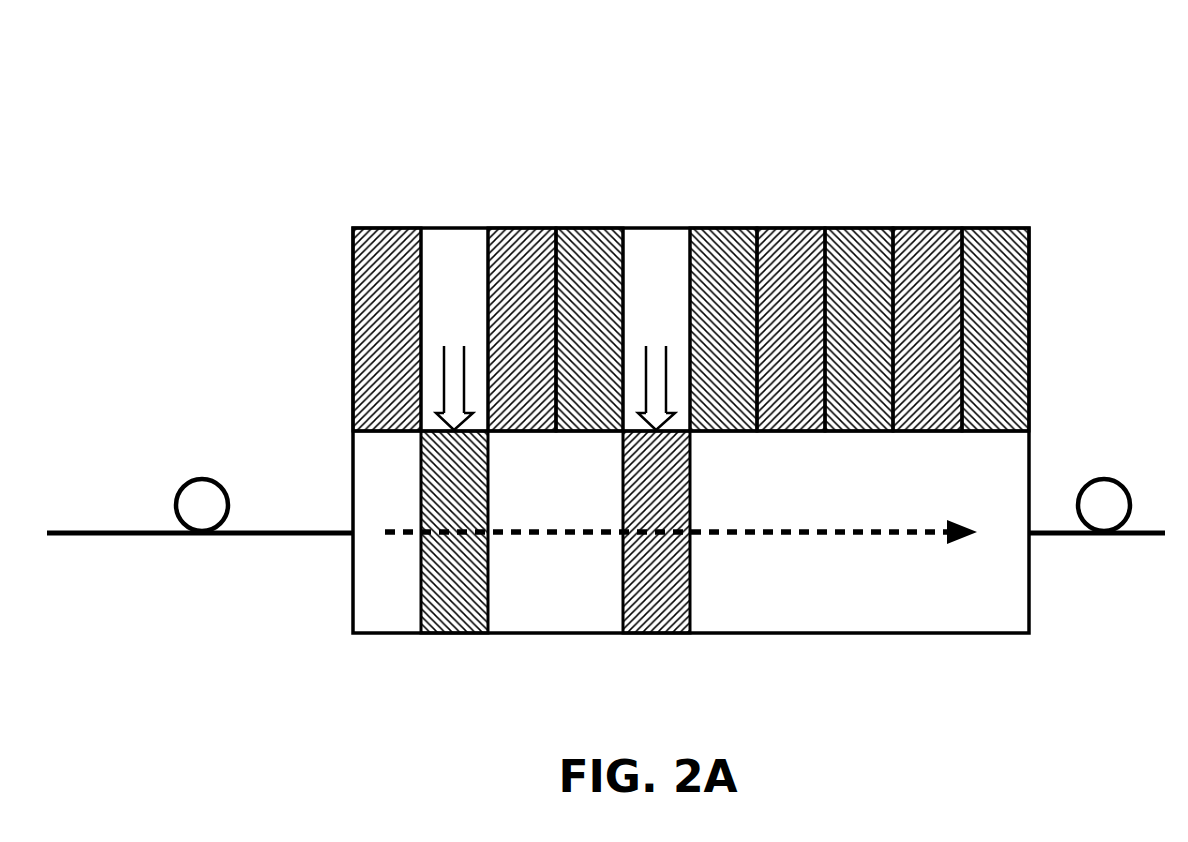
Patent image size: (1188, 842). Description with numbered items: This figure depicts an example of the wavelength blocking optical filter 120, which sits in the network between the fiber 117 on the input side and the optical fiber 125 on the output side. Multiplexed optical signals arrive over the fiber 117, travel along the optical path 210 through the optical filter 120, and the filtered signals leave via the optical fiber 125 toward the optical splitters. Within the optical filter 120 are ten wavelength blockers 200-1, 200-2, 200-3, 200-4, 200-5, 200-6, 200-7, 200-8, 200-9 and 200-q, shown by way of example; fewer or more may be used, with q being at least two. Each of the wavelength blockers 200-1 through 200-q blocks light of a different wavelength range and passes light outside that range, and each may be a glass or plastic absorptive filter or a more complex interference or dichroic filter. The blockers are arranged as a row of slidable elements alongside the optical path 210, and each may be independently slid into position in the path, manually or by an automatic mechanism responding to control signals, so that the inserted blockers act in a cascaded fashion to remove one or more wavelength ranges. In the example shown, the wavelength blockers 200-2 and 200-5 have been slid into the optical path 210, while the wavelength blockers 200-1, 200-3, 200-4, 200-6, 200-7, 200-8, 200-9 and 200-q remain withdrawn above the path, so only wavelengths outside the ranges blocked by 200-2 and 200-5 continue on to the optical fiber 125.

The wavelength blocking optical filter 120 is at (206, 101).
The fiber 117 is at (202, 560).
The optical fiber 125 is at (1104, 560).
The optical path 210 is at (784, 554).
The wavelength blocker 200-1 is at (387, 214).
The wavelength blocker 200-2 is at (455, 647).
The wavelength blocker 200-3 is at (522, 214).
The wavelength blocker 200-4 is at (589, 214).
The wavelength blocker 200-5 is at (657, 647).
The wavelength blocker 200-6 is at (725, 214).
The wavelength blocker 200-7 is at (792, 214).
The wavelength blocker 200-8 is at (860, 214).
The wavelength blocker 200-9 is at (927, 214).
The wavelength blocker 200-q is at (995, 214).